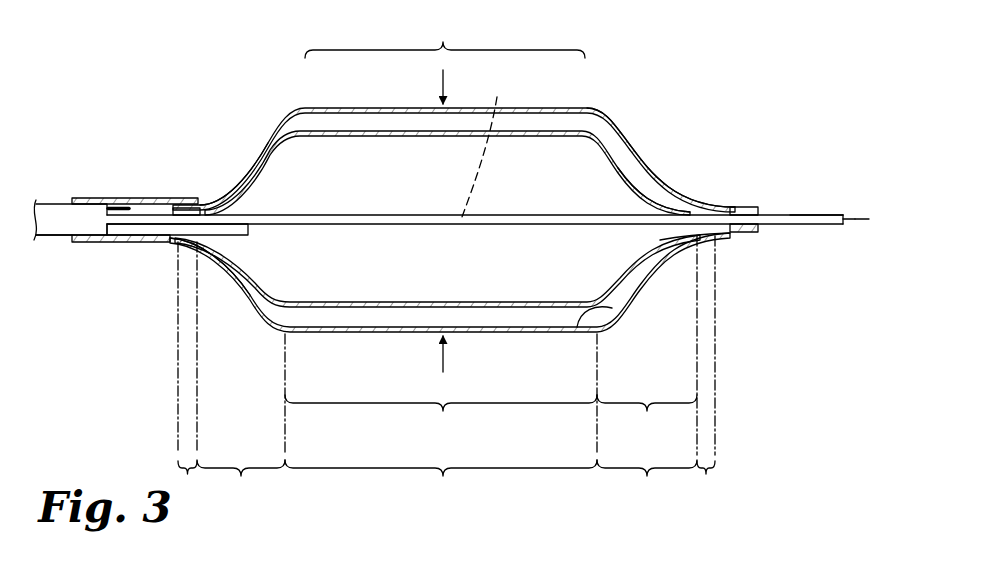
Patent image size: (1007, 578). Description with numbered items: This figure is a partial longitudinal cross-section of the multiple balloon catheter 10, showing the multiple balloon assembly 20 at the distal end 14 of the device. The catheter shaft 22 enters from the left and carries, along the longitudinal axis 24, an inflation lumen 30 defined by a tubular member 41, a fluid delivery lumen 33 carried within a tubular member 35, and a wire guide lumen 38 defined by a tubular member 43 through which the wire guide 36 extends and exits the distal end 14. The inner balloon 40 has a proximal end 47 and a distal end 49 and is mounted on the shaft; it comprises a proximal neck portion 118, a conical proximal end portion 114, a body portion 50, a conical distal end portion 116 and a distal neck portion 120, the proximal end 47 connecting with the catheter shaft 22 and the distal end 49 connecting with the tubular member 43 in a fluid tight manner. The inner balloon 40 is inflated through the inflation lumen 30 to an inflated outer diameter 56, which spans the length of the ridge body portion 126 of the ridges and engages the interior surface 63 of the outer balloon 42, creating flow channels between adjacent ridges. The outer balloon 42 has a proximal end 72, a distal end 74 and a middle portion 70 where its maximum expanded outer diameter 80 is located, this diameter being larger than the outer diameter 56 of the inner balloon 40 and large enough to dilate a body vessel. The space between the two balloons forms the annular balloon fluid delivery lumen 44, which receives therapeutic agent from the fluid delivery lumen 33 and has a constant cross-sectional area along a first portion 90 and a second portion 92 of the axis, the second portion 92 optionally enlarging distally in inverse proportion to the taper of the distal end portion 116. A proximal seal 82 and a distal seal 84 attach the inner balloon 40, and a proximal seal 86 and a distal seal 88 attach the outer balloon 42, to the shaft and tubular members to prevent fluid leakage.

The multiple balloon catheter 10 is at (158, 66).
The distal end 14 is at (842, 225).
The multiple balloon assembly 20 is at (157, 390).
The catheter shaft 22 is at (52, 206).
The longitudinal axis 24 is at (862, 218).
The inflation lumen 30 is at (176, 227).
The fluid delivery lumen 33 is at (143, 198).
The tubular member 35 is at (122, 206).
The wire guide 36 is at (845, 224).
The wire guide lumen 38 is at (487, 144).
The inner balloon 40 is at (625, 150).
The tubular member 41 is at (145, 226).
The outer balloon 42 is at (385, 106).
The tubular member 43 is at (818, 214).
The annular balloon fluid delivery lumen 44 is at (231, 150).
The proximal end 47 is at (180, 239).
The distal end 49 is at (713, 231).
The body portion 50 is at (441, 423).
The inflated outer diameter 56 is at (560, 123).
The interior surface 63 is at (583, 313).
The middle portion 70 is at (445, 55).
The proximal end 72 is at (46, 238).
The distal end 74 is at (759, 229).
The outer diameter 80 is at (443, 362).
The proximal seal 82 is at (198, 208).
The distal seal 84 is at (685, 207).
The proximal seal 86 is at (118, 205).
The distal seal 88 is at (742, 206).
The first portion 90 is at (441, 421).
The second portion 92 is at (647, 421).
The proximal end portion 114 is at (241, 377).
The distal end portion 116 is at (647, 423).
The proximal neck portion 118 is at (187, 377).
The distal neck portion 120 is at (706, 374).
The ridge body portion 126 is at (524, 317).